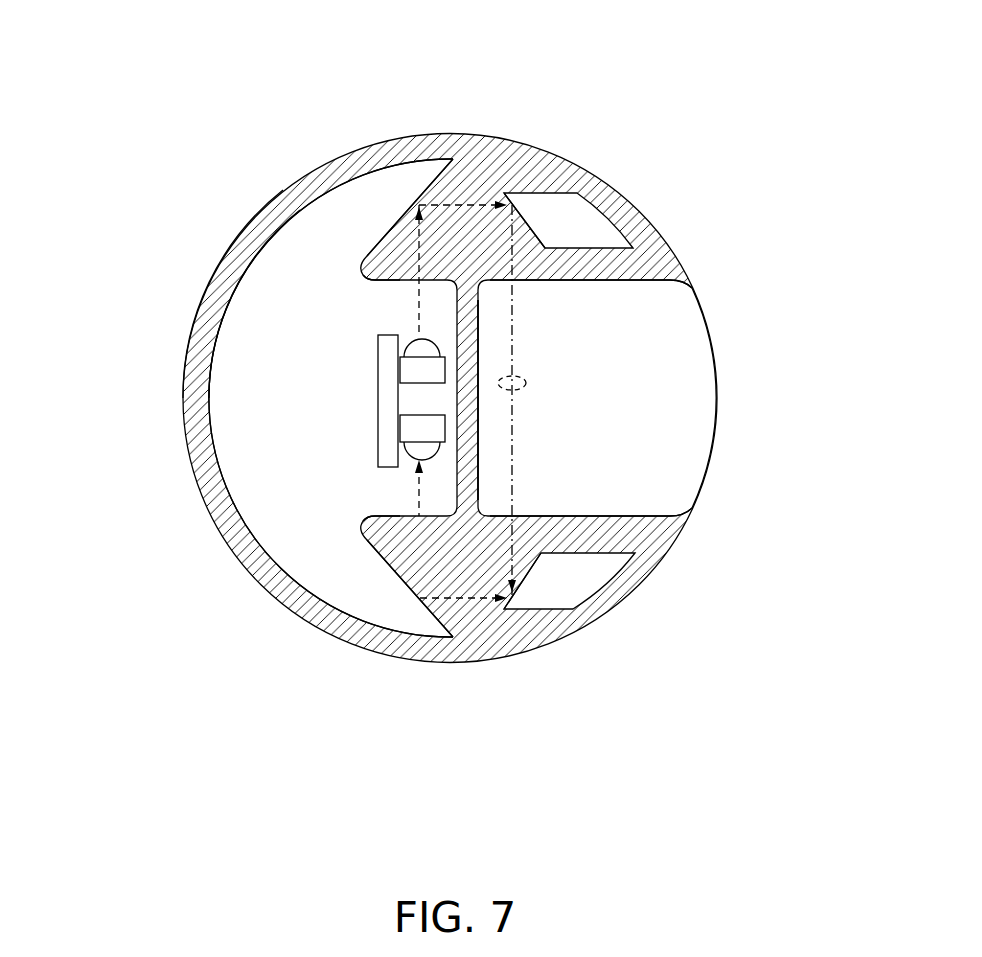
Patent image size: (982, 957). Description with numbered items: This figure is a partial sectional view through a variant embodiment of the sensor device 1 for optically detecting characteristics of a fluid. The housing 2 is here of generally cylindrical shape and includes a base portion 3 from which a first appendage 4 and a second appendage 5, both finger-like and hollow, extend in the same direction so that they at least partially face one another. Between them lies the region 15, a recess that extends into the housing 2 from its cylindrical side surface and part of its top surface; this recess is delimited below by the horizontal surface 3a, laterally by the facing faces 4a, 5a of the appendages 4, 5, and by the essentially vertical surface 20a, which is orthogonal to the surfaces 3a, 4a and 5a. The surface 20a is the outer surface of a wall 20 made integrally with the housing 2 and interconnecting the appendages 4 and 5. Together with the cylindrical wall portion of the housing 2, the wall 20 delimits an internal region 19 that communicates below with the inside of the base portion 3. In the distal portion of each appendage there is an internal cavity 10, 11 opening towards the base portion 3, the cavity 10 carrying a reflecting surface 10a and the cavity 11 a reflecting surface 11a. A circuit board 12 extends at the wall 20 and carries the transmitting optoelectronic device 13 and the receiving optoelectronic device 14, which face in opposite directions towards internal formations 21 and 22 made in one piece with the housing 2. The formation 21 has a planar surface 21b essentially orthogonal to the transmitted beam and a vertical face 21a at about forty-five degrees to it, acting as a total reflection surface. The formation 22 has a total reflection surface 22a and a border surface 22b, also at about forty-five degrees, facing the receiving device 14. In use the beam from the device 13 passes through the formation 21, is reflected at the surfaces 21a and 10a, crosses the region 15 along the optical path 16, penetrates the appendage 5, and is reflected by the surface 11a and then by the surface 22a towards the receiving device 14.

The sensor device 1 is at (508, 137).
The housing 2 is at (192, 347).
The base portion 3 is at (702, 489).
The horizontal surface 3a is at (697, 332).
The first appendage 4 is at (658, 255).
The face of first appendage 4a is at (645, 287).
The second appendage 5 is at (665, 553).
The face of second appendage 5a is at (683, 522).
The internal cavity of first appendage 10 is at (573, 236).
The reflecting surface 10a is at (542, 230).
The internal cavity of second appendage 11 is at (565, 587).
The reflecting surface 11a is at (540, 560).
The circuit board 12 is at (378, 398).
The transmitting optoelectronic device 13 is at (412, 350).
The receiving optoelectronic device 14 is at (398, 446).
The region 15 is at (565, 344).
The optical path 16 is at (527, 380).
The internal region 19 is at (238, 447).
The wall 20 is at (478, 468).
The outer surface of wall 20a is at (478, 425).
The internal formation 21 is at (398, 258).
The total reflection surface 21a is at (388, 237).
The planar surface 21b is at (390, 282).
The internal formation 22 is at (398, 578).
The total reflection surface 22a is at (392, 545).
The border surface 22b is at (397, 516).